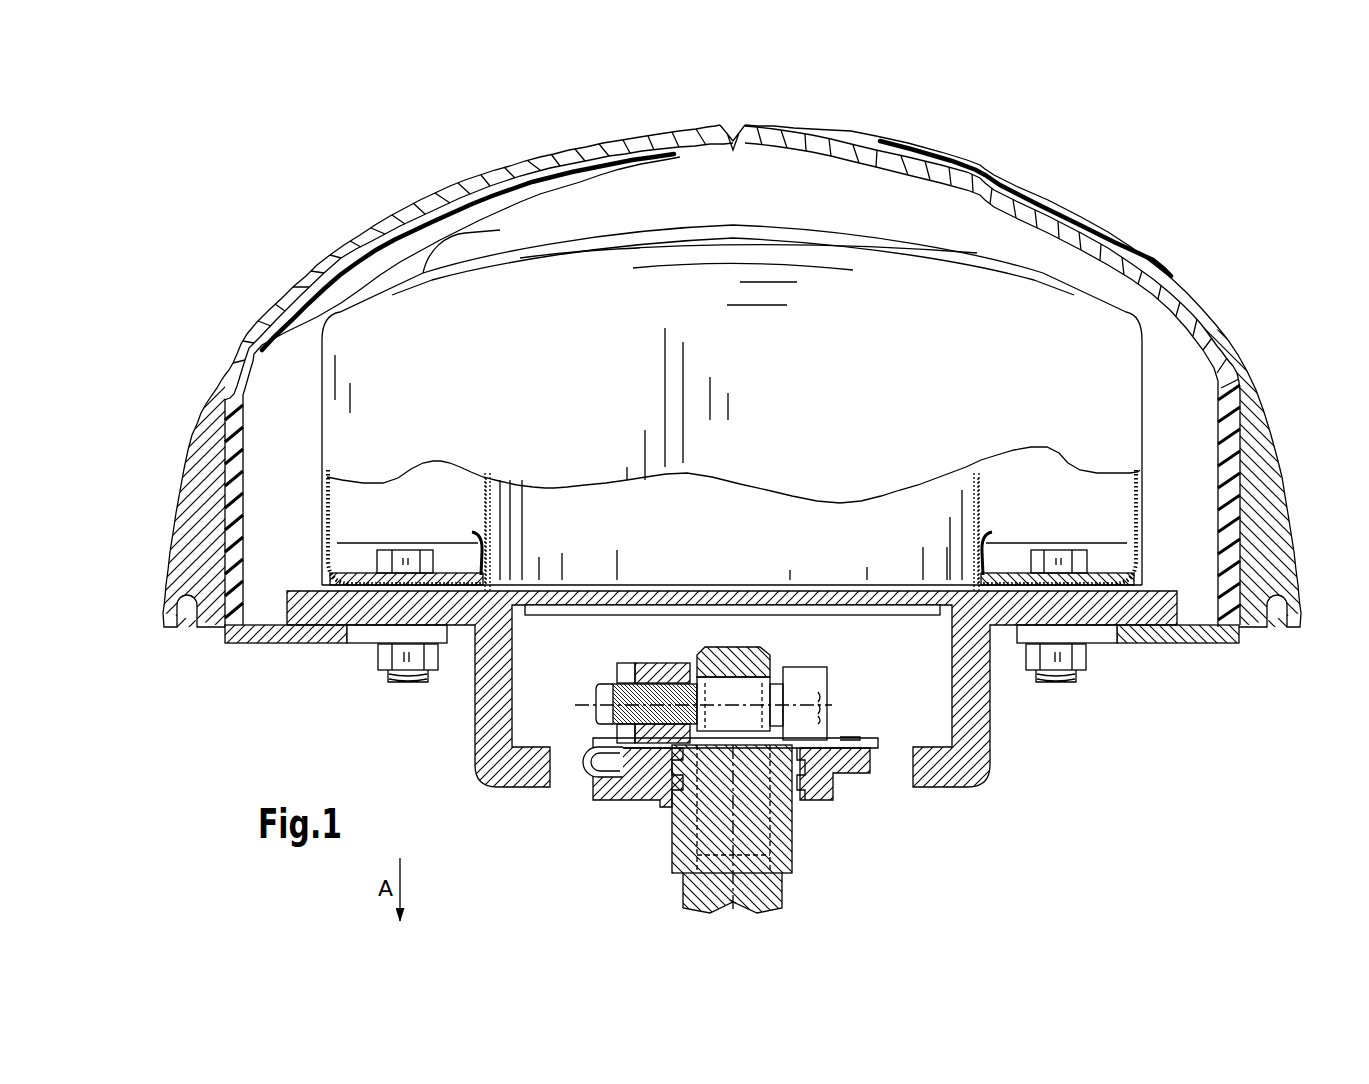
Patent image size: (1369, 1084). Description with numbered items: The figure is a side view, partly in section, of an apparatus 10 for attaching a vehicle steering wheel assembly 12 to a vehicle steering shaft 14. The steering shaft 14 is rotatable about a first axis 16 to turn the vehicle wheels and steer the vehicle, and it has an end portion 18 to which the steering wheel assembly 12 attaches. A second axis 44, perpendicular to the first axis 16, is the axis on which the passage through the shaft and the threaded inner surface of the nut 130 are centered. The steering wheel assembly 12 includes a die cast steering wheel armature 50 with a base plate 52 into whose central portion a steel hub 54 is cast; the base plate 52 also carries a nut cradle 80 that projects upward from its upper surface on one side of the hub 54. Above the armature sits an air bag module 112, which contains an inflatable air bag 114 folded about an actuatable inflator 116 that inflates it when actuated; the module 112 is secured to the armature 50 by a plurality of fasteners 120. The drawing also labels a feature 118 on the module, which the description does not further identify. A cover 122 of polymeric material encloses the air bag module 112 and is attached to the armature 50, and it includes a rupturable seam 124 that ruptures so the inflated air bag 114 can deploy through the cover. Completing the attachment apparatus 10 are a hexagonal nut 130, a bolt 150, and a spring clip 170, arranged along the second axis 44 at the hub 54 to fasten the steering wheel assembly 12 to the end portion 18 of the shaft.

The apparatus 10 is at (1007, 137).
The vehicle steering wheel assembly 12 is at (640, 806).
The vehicle steering shaft 14 is at (682, 892).
The first axis 16 is at (733, 913).
The end portion 18 is at (752, 645).
The second axis 44 is at (843, 702).
The steering wheel armature 50 is at (474, 736).
The base plate 52 is at (830, 796).
The hub 54 is at (677, 856).
The nut cradle 80 is at (615, 672).
The air bag module 112 is at (321, 438).
The air bag 114 is at (330, 500).
The inflator 116 is at (470, 493).
The lid rib 118 is at (500, 230).
The fasteners 120 is at (397, 676).
The cover 122 is at (742, 121).
The rupturable seam 124 is at (737, 148).
The nut 130 is at (667, 661).
The bolt 150 is at (835, 668).
The spring clip 170 is at (592, 776).